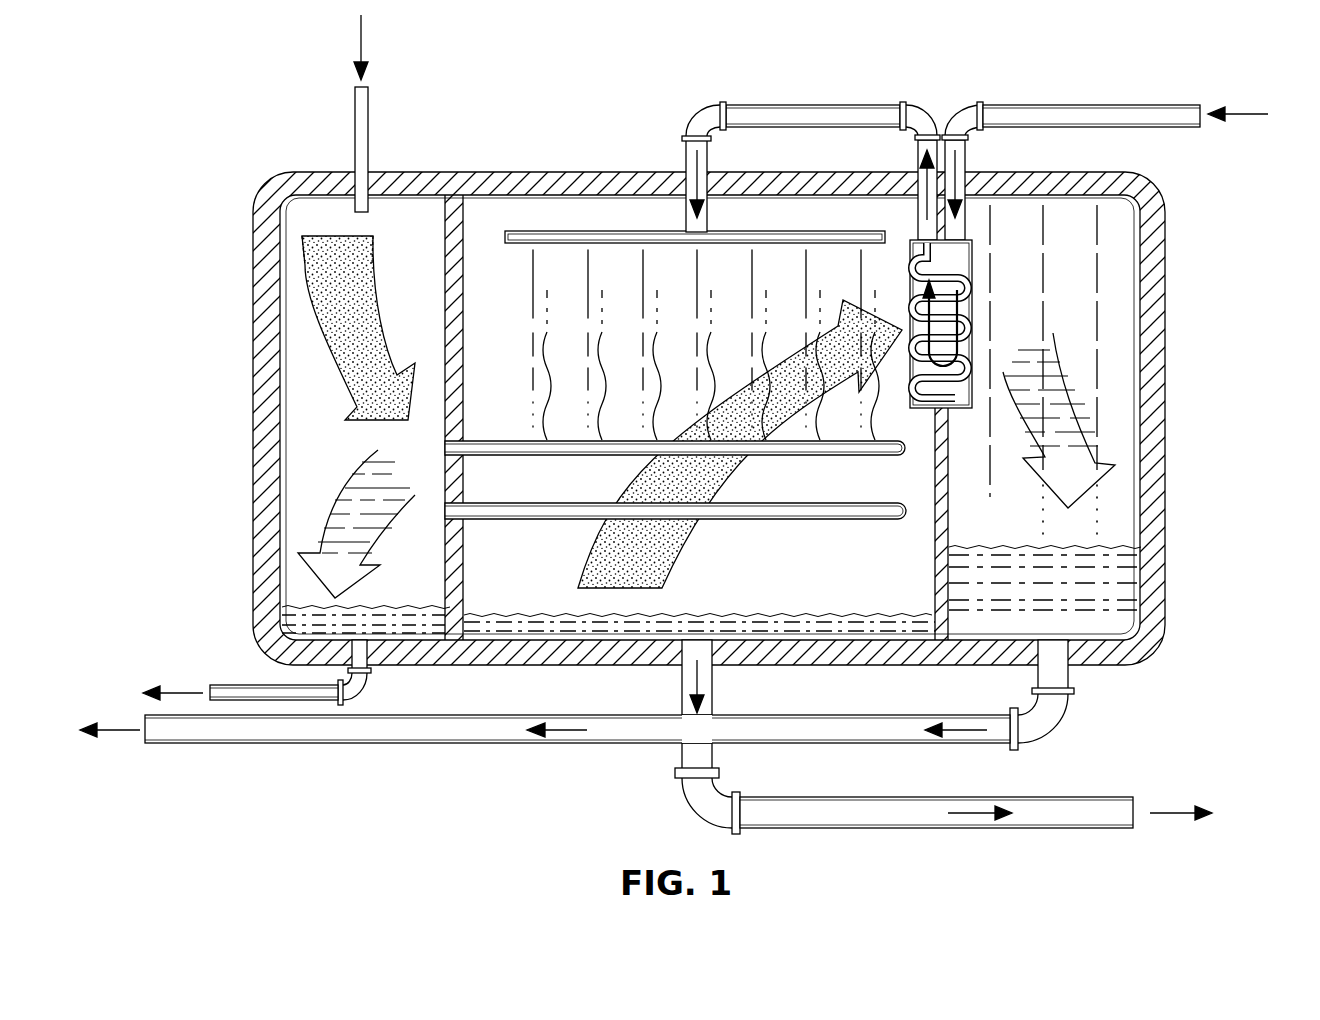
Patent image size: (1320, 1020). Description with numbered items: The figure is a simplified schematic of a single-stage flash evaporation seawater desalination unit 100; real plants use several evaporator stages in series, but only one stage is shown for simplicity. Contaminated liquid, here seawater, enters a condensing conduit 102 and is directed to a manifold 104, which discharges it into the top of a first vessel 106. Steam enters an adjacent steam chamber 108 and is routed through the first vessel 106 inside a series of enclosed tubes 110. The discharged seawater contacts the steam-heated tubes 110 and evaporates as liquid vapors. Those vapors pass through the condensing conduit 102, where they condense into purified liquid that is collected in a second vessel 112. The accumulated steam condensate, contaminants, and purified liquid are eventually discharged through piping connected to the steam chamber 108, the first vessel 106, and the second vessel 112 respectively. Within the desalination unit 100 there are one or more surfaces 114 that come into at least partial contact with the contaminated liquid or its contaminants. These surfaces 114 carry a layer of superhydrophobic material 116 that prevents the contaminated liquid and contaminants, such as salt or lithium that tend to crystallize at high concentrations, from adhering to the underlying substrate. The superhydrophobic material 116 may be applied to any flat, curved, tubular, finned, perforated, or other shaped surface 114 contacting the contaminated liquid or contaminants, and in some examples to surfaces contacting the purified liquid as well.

The single-stage flash evaporation seawater desalination unit 100 is at (208, 158).
The condensing conduit 102 is at (953, 257).
The manifold 104 is at (650, 244).
The first vessel 106 is at (797, 568).
The steam chamber 108 is at (342, 457).
The enclosed tubes 110 is at (565, 527).
The second vessel 112 is at (1107, 303).
The surfaces 114 is at (683, 437).
The layer of superhydrophobic material 116 is at (683, 437).